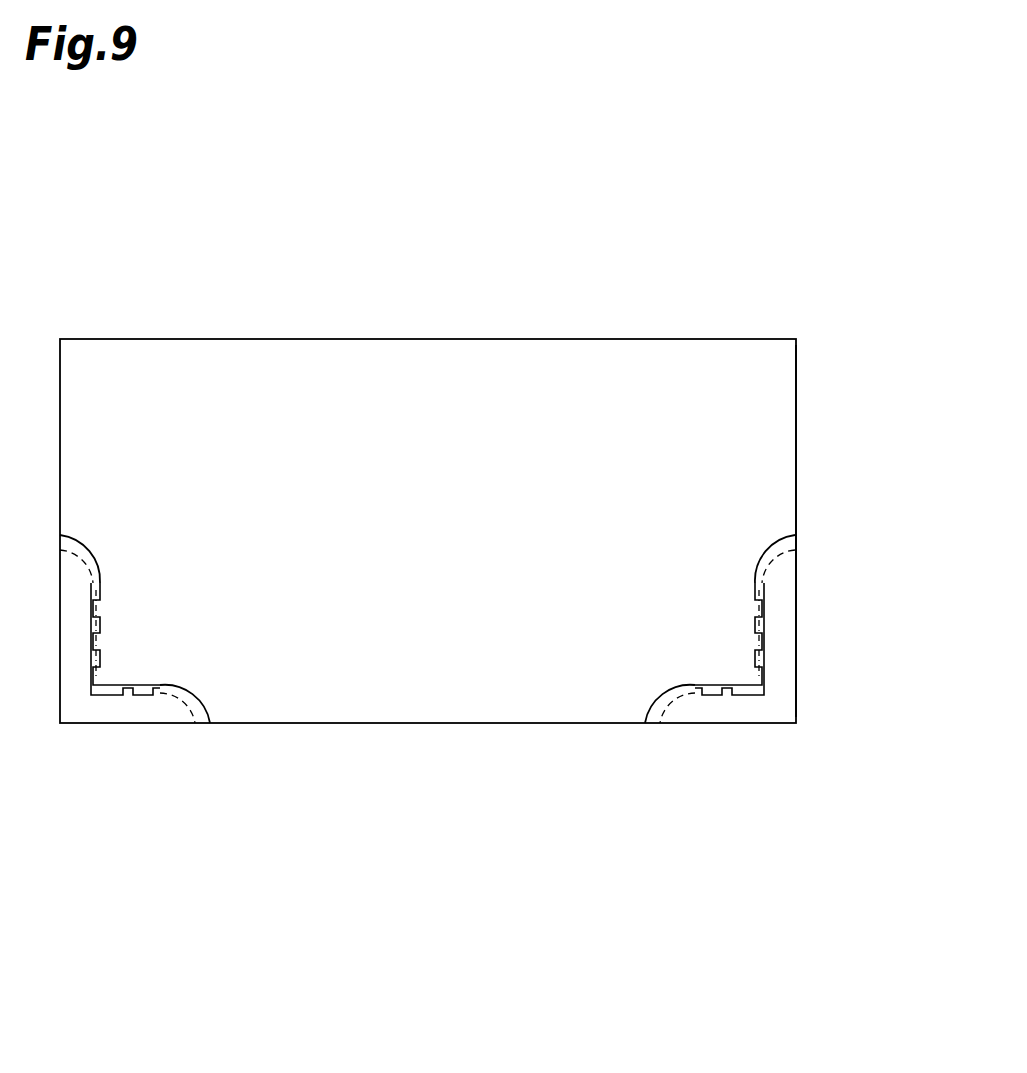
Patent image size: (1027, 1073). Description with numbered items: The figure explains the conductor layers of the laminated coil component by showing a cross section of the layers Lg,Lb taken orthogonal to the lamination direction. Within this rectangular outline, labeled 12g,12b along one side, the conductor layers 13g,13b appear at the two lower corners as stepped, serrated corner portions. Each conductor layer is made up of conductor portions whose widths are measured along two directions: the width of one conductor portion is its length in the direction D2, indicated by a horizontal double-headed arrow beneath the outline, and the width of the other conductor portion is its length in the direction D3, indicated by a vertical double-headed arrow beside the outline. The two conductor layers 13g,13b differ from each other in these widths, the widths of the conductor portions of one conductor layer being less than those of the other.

The layers Lg,Lb is at (558, 321).
The side surface of light guide 12g,12b is at (796, 419).
The conductor layers 13g,13b is at (121, 723).
The direction D2 is at (497, 854).
The direction D3 is at (870, 480).